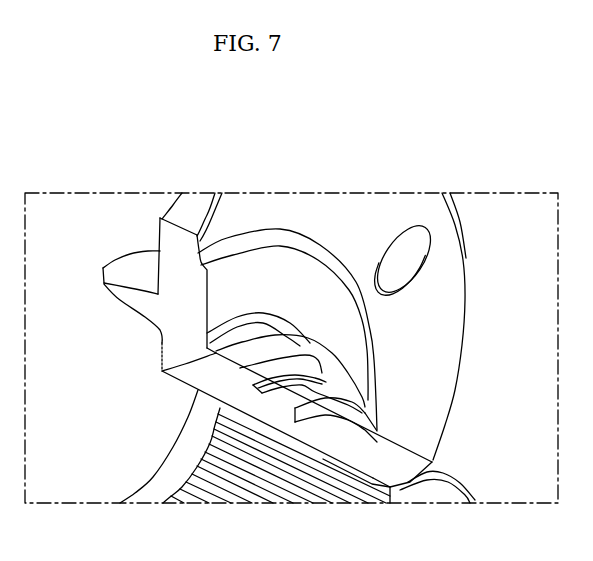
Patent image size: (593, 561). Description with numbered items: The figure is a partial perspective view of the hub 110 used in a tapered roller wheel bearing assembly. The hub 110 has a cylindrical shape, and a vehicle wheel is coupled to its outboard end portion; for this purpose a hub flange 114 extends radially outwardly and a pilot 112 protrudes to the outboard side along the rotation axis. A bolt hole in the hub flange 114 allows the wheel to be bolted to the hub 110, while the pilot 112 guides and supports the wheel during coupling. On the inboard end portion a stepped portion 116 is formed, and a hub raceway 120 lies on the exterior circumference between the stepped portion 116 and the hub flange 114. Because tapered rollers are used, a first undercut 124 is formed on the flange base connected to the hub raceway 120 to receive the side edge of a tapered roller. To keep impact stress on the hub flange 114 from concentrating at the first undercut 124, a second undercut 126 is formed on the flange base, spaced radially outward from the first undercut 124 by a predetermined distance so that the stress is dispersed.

The hub 110 is at (476, 256).
The pilot 112 is at (104, 279).
The hub flange 114 is at (172, 233).
The stepped portion 116 is at (377, 431).
The hub raceway 120 is at (292, 338).
The first undercut 124 is at (162, 371).
The second undercut 126 is at (207, 336).